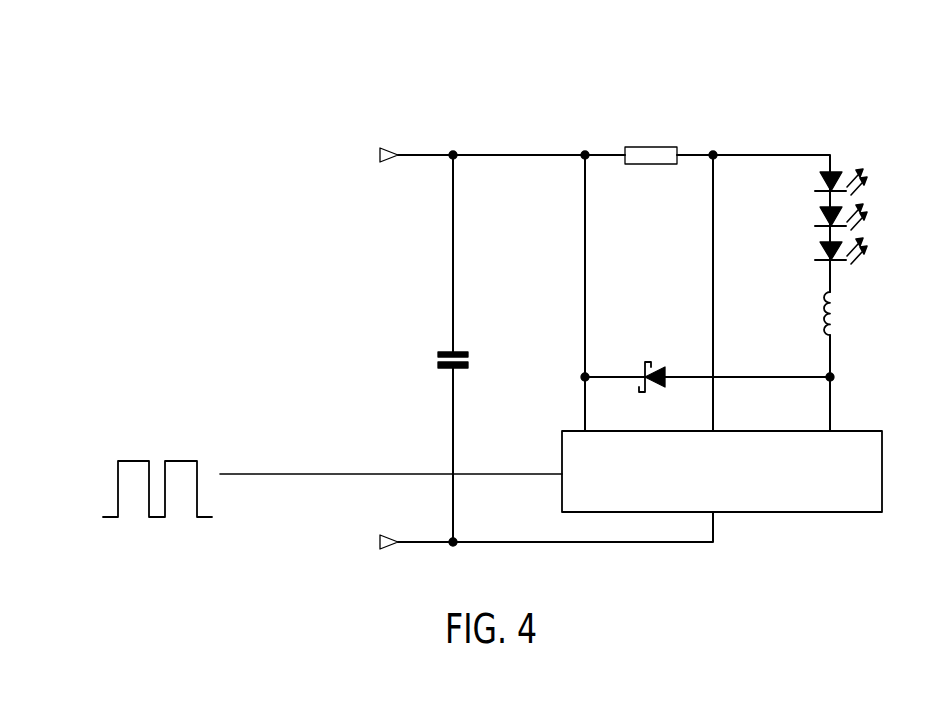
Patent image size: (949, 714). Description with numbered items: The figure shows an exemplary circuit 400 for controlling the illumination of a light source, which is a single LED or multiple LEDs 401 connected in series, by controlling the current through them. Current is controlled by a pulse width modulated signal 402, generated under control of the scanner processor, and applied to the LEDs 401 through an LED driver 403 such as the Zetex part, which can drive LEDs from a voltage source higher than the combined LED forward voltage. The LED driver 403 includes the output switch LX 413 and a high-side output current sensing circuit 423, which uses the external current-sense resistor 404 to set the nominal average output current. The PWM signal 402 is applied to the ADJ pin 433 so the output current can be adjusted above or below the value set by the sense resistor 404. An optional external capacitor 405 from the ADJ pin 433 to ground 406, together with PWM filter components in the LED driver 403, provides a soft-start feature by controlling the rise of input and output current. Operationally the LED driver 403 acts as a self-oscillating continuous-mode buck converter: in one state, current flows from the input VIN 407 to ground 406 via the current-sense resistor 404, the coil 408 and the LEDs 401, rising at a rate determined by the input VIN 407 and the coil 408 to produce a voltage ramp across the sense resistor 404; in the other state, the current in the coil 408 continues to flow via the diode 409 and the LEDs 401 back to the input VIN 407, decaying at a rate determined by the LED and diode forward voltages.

The circuit 400 is at (318, 58).
The LEDs 401 is at (862, 210).
The pulse width modulated (PWM) signal 402 is at (183, 432).
The LED driver 403 is at (811, 500).
The external current-sense resistor RS 404 is at (631, 146).
The external capacitor 405 is at (446, 351).
The ground 406 is at (378, 545).
The input VIN 407 is at (568, 443).
The coil L1 408 is at (823, 331).
The diode D1 409 is at (641, 364).
The output switch LX 413 is at (830, 458).
The high-side output current sensing circuit 423 is at (745, 450).
The ADJ pin 433 is at (582, 489).